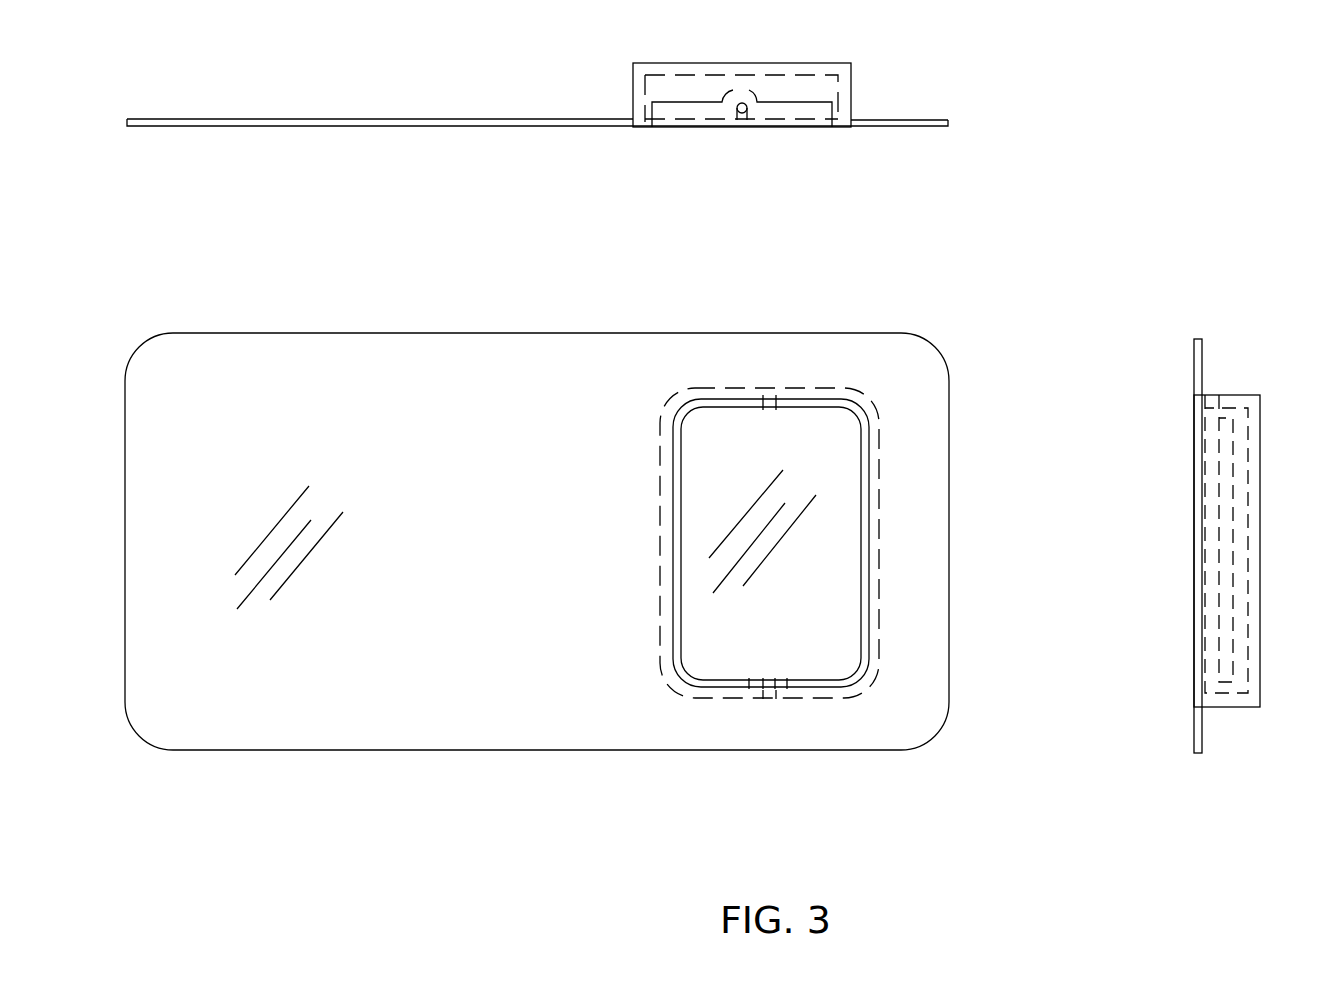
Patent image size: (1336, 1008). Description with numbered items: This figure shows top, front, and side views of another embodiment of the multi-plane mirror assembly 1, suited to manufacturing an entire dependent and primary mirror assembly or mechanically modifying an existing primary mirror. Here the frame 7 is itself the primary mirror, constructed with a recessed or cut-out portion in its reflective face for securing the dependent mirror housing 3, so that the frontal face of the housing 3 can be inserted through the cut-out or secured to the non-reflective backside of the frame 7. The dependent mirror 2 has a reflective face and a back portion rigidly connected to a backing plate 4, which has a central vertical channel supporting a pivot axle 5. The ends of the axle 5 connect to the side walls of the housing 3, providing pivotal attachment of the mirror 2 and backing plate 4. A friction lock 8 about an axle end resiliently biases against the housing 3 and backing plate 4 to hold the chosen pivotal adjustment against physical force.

The multi-plane mirror assembly 1 is at (938, 325).
The dependent mirror 2 is at (843, 462).
The dependent mirror housing 3 is at (879, 555).
The backing plate 4 is at (788, 101).
The pivot axle 5 is at (1216, 396).
The housing frame 7 is at (847, 128).
The friction lock 8 is at (785, 682).